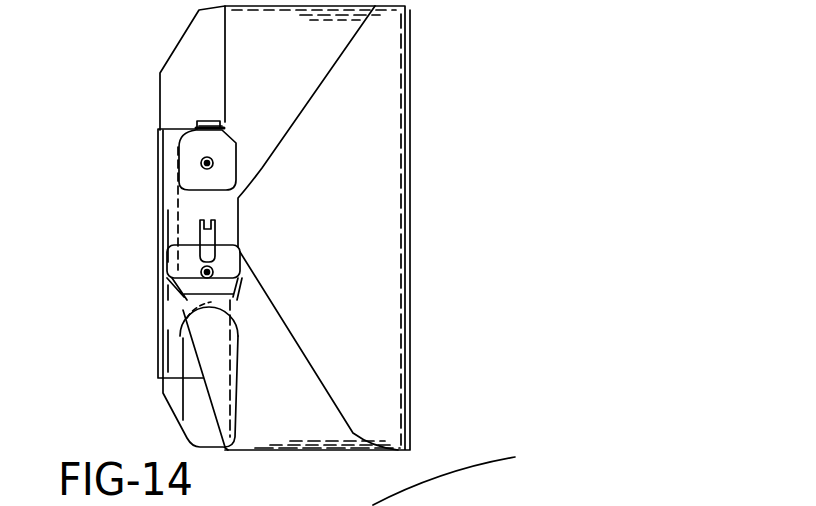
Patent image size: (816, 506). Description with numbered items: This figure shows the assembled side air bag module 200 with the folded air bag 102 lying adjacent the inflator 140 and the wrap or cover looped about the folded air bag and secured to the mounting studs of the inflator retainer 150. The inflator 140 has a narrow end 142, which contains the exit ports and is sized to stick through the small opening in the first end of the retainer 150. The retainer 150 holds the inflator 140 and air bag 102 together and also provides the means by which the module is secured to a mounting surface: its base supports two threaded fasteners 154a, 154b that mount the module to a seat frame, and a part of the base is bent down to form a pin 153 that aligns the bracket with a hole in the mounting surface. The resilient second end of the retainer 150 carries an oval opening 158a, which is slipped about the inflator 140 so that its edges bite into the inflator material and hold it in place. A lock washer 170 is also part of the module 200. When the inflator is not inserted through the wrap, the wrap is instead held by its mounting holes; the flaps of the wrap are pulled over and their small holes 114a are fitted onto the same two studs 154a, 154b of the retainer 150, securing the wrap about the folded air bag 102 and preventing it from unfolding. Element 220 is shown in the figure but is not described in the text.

The air bag 102 is at (380, 90).
The small holes 114a is at (238, 147).
The inflator 140 is at (197, 400).
The narrow end 142 is at (207, 123).
The inflator retainer 150 is at (190, 212).
The pin 153 is at (208, 235).
The threaded fastener 154a is at (200, 163).
The threaded fastener 154b is at (200, 273).
The oval opening 158a is at (180, 318).
The lock washer 170 is at (196, 125).
The side air bag module 200 is at (410, 272).
The base 220 is at (457, 468).